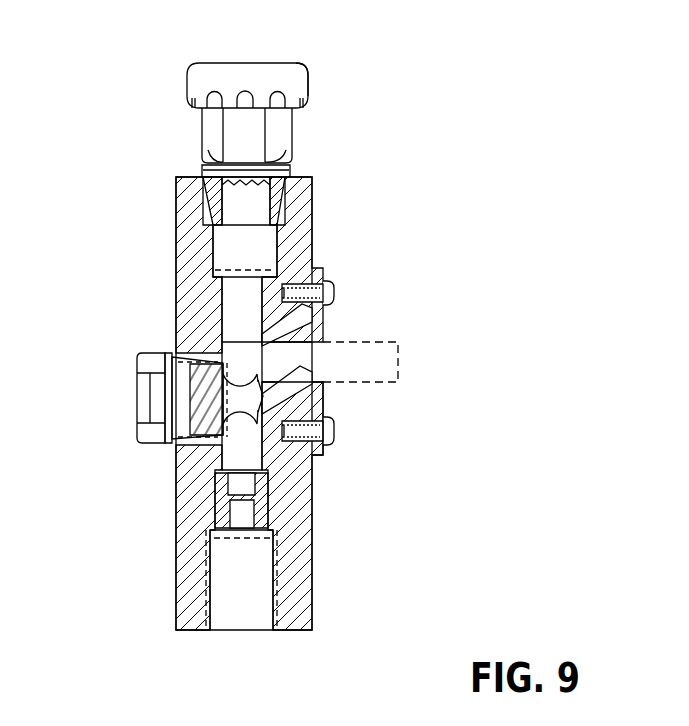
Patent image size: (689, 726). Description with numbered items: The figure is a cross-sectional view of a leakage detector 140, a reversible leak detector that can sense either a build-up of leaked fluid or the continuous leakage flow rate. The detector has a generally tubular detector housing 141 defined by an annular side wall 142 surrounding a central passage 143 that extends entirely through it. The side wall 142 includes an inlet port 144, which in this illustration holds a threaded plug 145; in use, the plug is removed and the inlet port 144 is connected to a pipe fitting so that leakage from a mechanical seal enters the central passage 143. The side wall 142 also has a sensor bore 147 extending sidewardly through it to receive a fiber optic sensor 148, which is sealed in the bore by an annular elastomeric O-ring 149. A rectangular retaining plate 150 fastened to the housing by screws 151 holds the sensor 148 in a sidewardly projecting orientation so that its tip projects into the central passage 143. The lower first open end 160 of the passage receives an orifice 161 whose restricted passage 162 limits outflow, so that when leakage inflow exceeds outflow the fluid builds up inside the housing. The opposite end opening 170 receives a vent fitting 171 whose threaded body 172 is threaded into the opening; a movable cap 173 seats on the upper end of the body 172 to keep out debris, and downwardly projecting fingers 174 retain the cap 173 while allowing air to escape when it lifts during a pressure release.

The leakage detector 140 is at (438, 120).
The detector housing 141 is at (192, 215).
The annular side wall 142 is at (305, 213).
The central passage 143 is at (243, 298).
The inlet port 144 is at (183, 480).
The threaded plug 145 is at (150, 380).
The sensor bore 147 is at (322, 386).
The fiber optic sensor 148 is at (398, 342).
The annular elastomeric O-ring 149 is at (310, 330).
The retaining plate 150 is at (320, 458).
The screws 151 is at (332, 296).
The first open end 160 is at (255, 610).
The orifice 161 is at (282, 513).
The restricted passage 162 is at (222, 512).
The opposite end opening 170 is at (291, 176).
The vent fitting 171 is at (252, 76).
The threaded body 172 is at (215, 138).
The movable cap 173 is at (298, 80).
The downwardly projecting fingers 174 is at (208, 99).